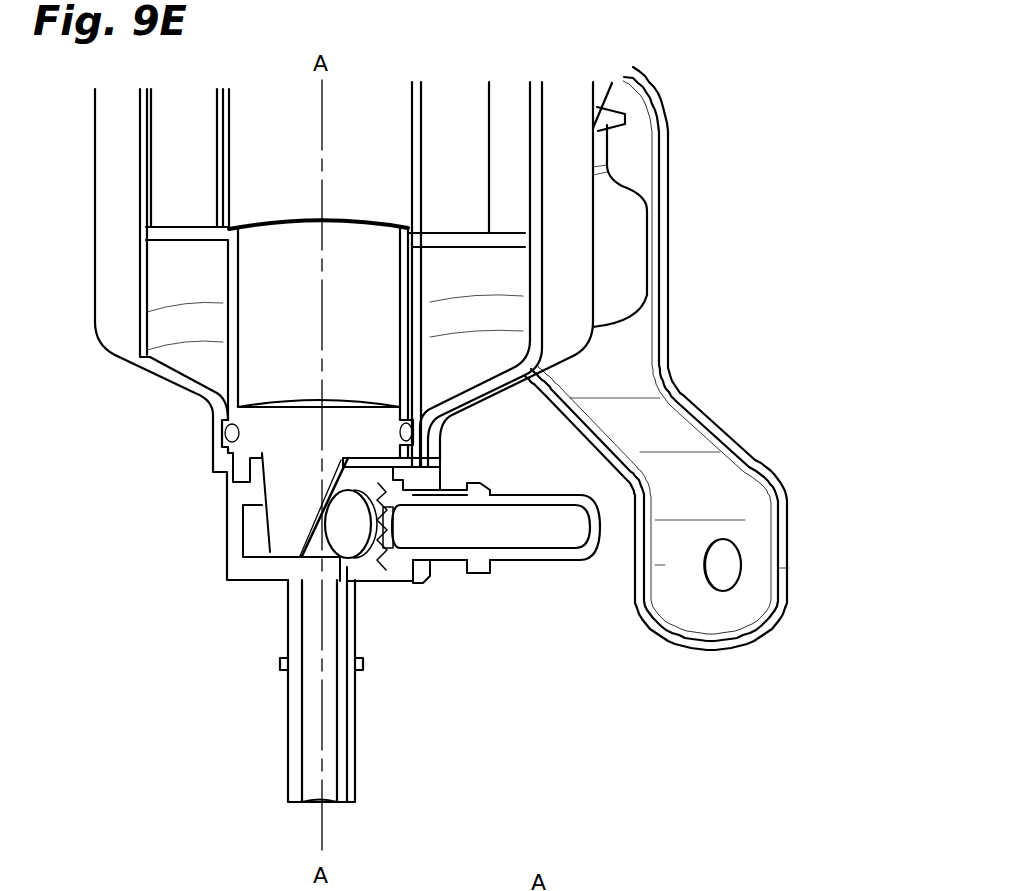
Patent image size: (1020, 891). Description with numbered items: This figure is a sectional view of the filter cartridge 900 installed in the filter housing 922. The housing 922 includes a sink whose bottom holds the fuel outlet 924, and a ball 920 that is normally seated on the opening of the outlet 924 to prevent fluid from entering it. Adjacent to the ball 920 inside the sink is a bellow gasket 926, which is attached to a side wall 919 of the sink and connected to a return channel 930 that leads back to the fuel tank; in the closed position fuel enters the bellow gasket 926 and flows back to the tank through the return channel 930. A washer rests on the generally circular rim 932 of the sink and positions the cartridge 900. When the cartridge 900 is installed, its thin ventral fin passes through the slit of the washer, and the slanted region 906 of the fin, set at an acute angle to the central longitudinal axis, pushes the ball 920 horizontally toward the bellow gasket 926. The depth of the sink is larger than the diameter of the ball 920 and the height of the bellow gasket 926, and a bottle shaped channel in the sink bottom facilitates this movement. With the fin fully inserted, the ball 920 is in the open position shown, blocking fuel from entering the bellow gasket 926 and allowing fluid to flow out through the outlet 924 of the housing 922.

The cartridge 900 is at (225, 350).
The slanted region 906 is at (318, 552).
The side wall 919 is at (400, 485).
The ball 920 is at (352, 557).
The filter housing 922 is at (700, 215).
The fuel outlet 924 is at (317, 750).
The bellow gasket 926 is at (403, 527).
The return channel 930 is at (567, 537).
The rim 932 is at (226, 478).